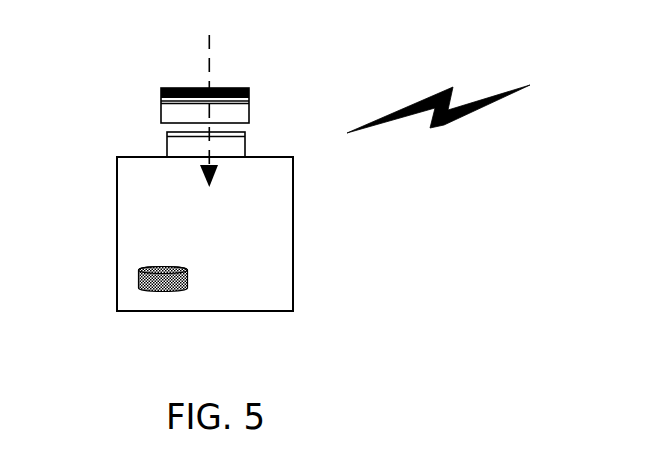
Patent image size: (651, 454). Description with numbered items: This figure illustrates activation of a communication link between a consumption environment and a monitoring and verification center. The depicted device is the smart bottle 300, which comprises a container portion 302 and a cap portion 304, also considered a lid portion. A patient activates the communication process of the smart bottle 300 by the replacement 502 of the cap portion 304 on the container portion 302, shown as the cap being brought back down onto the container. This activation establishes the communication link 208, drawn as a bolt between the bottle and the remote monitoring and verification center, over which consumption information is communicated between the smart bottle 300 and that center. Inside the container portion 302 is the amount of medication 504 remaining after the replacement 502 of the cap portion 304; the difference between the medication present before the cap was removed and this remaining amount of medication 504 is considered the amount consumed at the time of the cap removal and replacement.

The smart bottle 300 is at (393, 17).
The container portion 302 is at (117, 275).
The cap portion 304 is at (162, 117).
The replacement of the cap portion 502 is at (210, 76).
The amount of medication subsequent to replacement 504 is at (177, 291).
The communication link 208 is at (443, 124).